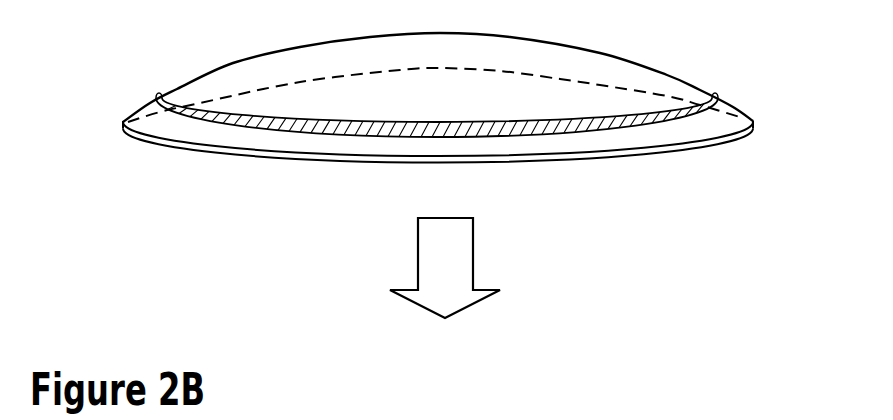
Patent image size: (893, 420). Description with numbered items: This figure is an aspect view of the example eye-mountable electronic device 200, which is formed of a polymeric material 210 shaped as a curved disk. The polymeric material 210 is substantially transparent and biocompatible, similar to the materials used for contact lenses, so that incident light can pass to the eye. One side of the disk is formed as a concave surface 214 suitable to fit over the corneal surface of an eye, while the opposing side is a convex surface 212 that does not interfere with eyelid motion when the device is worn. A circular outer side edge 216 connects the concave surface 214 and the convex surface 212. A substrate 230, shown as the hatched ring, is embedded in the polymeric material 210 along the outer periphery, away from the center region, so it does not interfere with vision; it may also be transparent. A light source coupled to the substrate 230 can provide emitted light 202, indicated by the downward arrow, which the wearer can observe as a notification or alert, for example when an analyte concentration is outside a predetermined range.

The eye-mountable electronic device 200 is at (218, 43).
The emitted light 202 is at (473, 277).
The polymeric material 210 is at (443, 176).
The convex surface 212 is at (667, 76).
The concave surface 214 is at (687, 128).
The circular outer side edge 216 is at (580, 158).
The substrate 230 is at (173, 98).